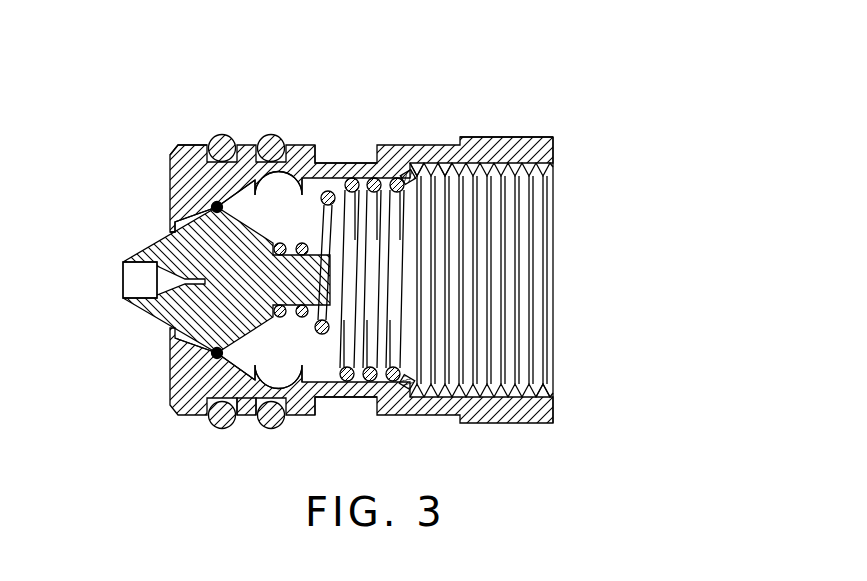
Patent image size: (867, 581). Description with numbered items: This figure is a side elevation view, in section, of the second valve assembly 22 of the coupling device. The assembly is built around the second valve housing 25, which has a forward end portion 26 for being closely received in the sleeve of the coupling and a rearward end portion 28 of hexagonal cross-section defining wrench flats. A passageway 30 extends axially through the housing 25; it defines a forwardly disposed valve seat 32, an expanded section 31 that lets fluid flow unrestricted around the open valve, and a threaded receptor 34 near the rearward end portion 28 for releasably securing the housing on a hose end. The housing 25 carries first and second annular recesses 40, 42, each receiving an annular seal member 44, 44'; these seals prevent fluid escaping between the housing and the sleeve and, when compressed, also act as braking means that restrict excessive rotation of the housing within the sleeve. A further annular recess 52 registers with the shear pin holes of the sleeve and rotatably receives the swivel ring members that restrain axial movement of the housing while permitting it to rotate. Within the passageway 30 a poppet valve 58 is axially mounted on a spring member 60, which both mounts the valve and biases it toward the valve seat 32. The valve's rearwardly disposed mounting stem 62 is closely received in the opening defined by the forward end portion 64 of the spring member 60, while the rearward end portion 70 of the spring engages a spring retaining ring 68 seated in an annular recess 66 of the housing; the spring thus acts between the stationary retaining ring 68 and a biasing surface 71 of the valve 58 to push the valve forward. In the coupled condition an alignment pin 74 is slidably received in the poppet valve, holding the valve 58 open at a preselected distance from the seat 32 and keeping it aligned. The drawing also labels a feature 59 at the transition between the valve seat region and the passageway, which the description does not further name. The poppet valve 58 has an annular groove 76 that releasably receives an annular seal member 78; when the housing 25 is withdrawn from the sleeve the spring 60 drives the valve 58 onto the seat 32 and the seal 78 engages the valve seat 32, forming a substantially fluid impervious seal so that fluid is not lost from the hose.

The second valve assembly 22 is at (508, 66).
The second valve housing 25 is at (512, 137).
The forward end portion 26 is at (185, 390).
The rearward end portion 28 is at (555, 268).
The passageway 30 is at (292, 224).
The expanded section 31 is at (290, 399).
The valve seat 32 is at (175, 358).
The threaded receptor 34 is at (545, 381).
The first annular recess 40 is at (177, 146).
The second annular recess 42 is at (311, 144).
The annular seal member 44 is at (216, 235).
The annular seal member 44' is at (279, 244).
The annular recess 52 is at (343, 178).
The poppet valve 58 is at (170, 323).
The seat edge 59 is at (254, 184).
The spring member 60 is at (332, 192).
The mounting stem 62 is at (288, 304).
The forward end portion of spring member 64 is at (320, 336).
The annular recess 66 is at (420, 172).
The spring retaining ring 68 is at (448, 167).
The rearward end portion of spring member 70 is at (399, 174).
The biasing surface 71 is at (254, 399).
The alignment pin 74 is at (145, 286).
The annular groove 76 is at (168, 233).
The annular seal member 78 is at (213, 207).